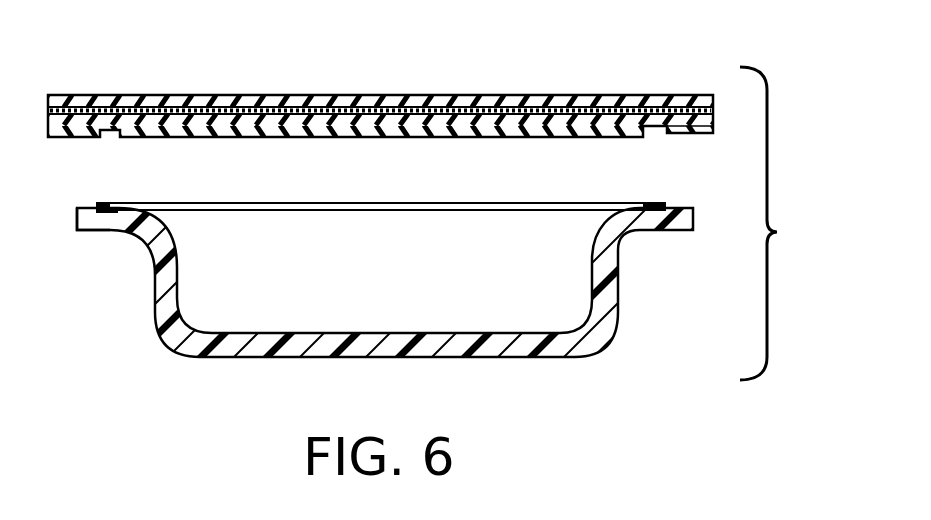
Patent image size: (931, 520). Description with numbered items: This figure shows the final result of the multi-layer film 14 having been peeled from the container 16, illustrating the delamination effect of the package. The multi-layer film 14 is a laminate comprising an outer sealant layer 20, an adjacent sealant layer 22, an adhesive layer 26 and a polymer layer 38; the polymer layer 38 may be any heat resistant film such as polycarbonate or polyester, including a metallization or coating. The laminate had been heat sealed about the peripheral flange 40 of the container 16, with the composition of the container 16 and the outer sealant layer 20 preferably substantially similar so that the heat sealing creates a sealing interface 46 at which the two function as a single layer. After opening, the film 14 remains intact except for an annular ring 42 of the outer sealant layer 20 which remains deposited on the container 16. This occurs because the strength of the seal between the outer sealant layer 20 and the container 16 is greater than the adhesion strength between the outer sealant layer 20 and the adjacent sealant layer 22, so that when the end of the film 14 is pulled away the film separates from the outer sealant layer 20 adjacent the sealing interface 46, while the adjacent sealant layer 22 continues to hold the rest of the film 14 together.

The multi-layer film 14 is at (465, 84).
The container 16 is at (215, 367).
The outer sealant layer 20 is at (685, 134).
The adjacent sealant layer 22 is at (713, 120).
The adhesive layer 26 is at (715, 109).
The polymer layer 38 is at (622, 94).
The peripheral flange 40 is at (100, 226).
The annular ring 42 is at (650, 200).
The sealing interface 46 is at (112, 213).